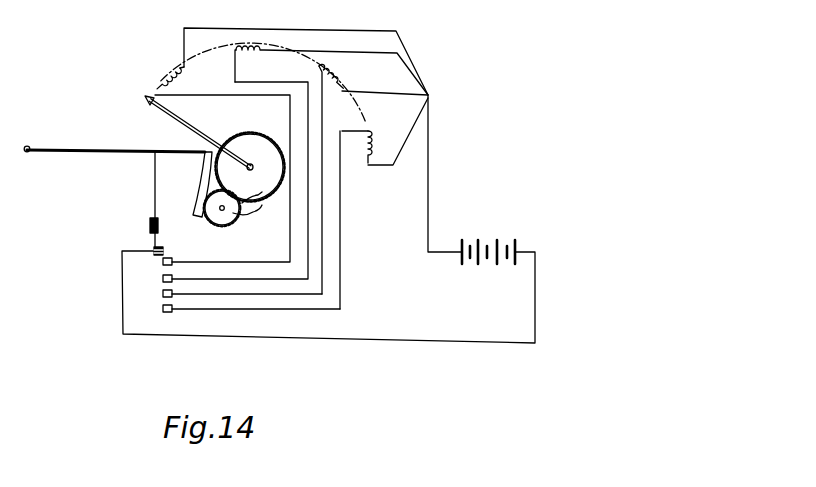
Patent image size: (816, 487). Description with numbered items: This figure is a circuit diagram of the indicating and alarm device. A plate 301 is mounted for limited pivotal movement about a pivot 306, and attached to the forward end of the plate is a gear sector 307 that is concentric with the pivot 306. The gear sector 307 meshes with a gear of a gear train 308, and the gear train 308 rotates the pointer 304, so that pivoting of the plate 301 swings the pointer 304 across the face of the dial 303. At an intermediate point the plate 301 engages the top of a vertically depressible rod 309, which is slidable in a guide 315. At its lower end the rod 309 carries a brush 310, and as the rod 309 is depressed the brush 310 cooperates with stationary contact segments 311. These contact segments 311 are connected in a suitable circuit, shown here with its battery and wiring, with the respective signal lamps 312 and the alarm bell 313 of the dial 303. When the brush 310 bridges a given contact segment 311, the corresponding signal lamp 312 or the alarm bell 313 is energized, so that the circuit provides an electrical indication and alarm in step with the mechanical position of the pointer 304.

The plate 301 is at (98, 148).
The dial 303 is at (210, 47).
The pointer 304 is at (203, 130).
The pivot 306 is at (37, 134).
The gear sector 307 is at (202, 178).
The gear train 308 is at (252, 214).
The vertically depressible rod 309 is at (152, 173).
The brush 310 is at (157, 257).
The stationary contact segments 311 is at (174, 279).
The signal lamps 312 is at (165, 72).
The alarm bell 313 is at (368, 164).
The guide 315 is at (150, 228).